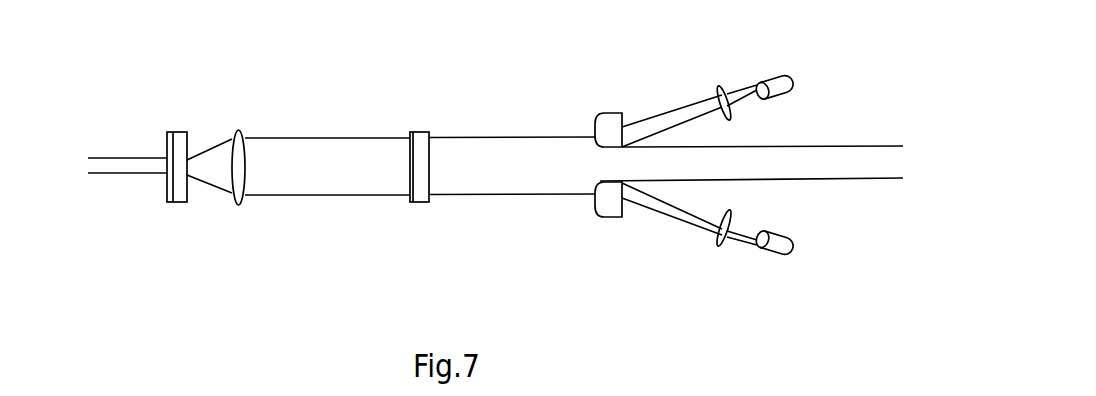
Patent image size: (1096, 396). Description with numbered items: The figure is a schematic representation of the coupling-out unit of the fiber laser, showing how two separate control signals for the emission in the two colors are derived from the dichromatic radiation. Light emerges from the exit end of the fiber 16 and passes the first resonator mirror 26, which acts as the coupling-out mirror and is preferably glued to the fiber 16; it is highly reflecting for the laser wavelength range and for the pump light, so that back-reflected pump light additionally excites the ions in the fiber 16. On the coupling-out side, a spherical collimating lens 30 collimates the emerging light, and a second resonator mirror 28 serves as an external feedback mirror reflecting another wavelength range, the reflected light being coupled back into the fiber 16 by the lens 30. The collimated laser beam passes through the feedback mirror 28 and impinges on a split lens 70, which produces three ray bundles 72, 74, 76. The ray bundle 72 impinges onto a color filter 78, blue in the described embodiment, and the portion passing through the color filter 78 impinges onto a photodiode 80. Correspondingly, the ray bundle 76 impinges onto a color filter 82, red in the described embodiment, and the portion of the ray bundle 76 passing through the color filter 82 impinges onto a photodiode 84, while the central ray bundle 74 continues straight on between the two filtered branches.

The fiber 16 is at (128, 152).
The first resonator mirror 26 is at (188, 130).
The second resonator mirror 28 is at (412, 130).
The collimating lens 30 is at (240, 130).
The split lens 70 is at (607, 121).
The ray bundle 72 is at (660, 120).
The ray bundle 74 is at (750, 160).
The ray bundle 76 is at (660, 217).
The color filter 78 is at (720, 85).
The photodiode 80 is at (777, 77).
The color filter 82 is at (720, 247).
The photodiode 84 is at (783, 253).